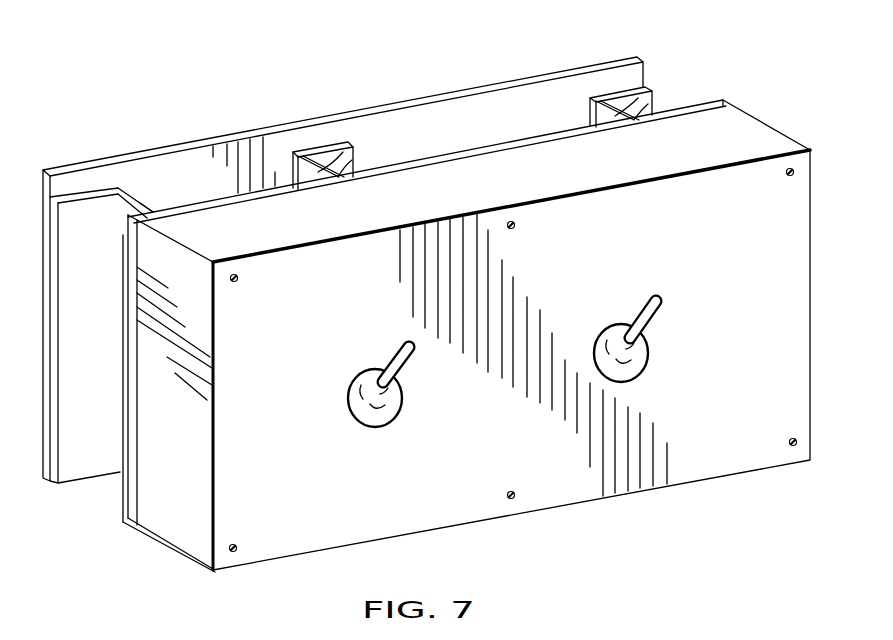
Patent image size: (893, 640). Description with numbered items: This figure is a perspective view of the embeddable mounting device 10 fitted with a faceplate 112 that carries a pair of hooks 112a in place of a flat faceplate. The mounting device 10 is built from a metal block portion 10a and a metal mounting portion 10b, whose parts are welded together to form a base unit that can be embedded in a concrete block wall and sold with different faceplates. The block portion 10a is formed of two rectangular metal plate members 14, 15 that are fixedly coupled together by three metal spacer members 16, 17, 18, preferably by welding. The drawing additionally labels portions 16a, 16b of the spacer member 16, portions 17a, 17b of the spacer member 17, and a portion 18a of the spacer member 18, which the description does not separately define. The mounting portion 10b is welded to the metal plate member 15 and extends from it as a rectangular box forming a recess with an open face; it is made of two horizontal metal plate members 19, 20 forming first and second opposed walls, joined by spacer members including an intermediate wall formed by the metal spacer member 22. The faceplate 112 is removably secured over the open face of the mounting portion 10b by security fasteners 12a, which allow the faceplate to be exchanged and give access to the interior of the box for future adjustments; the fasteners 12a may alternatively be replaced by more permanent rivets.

The embeddable mounting device 10 is at (748, 58).
The metal block portion 10a is at (734, 105).
The metal mounting portion 10b is at (820, 151).
The security fasteners 12a is at (785, 177).
The metal plate member 14 is at (192, 135).
The metal plate member 15 is at (423, 150).
The metal spacer member 16 is at (142, 180).
The lower flange portion 16a is at (153, 198).
The end flange plate 16b is at (77, 192).
The metal spacer member 17 is at (293, 150).
The clip gusset 17a is at (344, 152).
The clip top plate 17b is at (331, 143).
The metal spacer member 18 is at (567, 96).
The clip gusset 18a is at (649, 98).
The horizontal metal plate member 19 is at (348, 208).
The horizontal metal plate member 20 is at (183, 527).
The metal spacer member 22 is at (148, 383).
The faceplate 112 is at (812, 320).
The hooks 112a is at (403, 411).